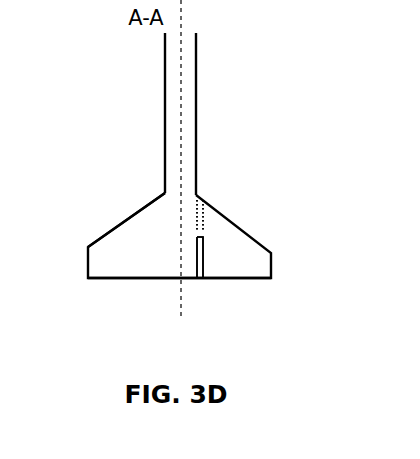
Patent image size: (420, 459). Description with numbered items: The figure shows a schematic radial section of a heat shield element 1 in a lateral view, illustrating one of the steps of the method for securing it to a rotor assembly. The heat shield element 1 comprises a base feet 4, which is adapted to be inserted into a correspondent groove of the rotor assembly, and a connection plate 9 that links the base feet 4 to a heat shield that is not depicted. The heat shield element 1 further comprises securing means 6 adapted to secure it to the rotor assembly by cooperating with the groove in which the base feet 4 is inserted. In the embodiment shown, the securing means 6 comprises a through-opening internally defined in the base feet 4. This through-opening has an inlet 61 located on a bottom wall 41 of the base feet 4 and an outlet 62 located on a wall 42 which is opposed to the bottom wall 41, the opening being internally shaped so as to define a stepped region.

The heat shield element 1 is at (187, 181).
The connection plate 9 is at (185, 171).
The base feet 4 is at (143, 255).
The wall 42 is at (111, 217).
The bottom wall 41 is at (116, 291).
The securing means 6 is at (211, 229).
The outlet 62 is at (210, 190).
The inlet 61 is at (211, 286).